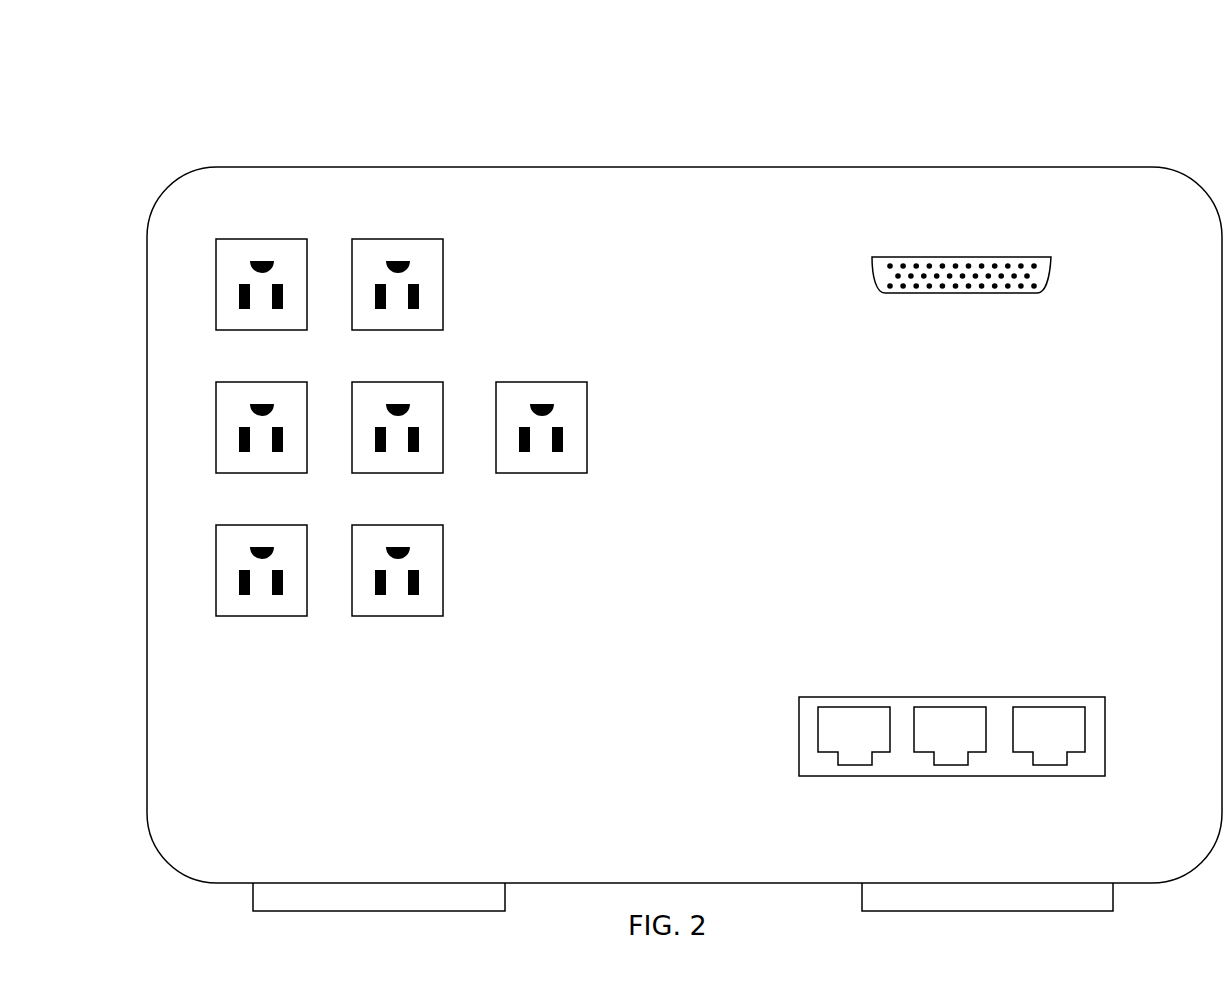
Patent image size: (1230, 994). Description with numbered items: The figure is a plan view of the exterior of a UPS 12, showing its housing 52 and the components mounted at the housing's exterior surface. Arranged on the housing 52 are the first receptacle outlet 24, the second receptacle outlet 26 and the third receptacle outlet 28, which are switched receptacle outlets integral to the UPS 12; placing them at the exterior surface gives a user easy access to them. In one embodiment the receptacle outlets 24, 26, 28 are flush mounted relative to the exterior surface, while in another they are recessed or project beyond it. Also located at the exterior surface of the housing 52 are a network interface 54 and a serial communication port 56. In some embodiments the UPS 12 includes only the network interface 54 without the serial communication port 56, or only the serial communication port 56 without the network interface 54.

The UPS 12 is at (1068, 114).
The housing 52 is at (460, 167).
The first receptacle outlet 24 is at (456, 234).
The second receptacle outlet 26 is at (597, 376).
The third receptacle outlet 28 is at (457, 520).
The network interface 54 is at (1016, 697).
The serial communication port 56 is at (1052, 263).